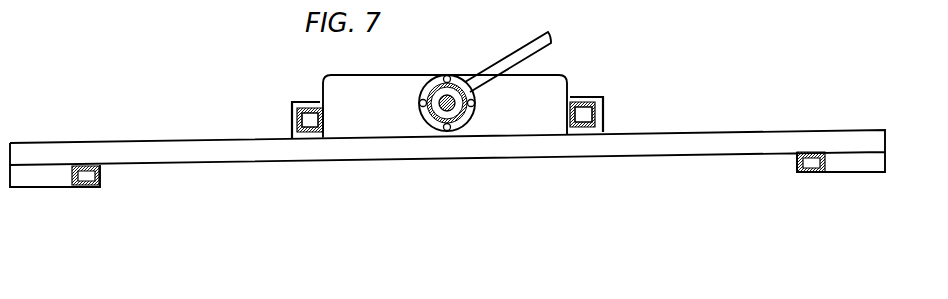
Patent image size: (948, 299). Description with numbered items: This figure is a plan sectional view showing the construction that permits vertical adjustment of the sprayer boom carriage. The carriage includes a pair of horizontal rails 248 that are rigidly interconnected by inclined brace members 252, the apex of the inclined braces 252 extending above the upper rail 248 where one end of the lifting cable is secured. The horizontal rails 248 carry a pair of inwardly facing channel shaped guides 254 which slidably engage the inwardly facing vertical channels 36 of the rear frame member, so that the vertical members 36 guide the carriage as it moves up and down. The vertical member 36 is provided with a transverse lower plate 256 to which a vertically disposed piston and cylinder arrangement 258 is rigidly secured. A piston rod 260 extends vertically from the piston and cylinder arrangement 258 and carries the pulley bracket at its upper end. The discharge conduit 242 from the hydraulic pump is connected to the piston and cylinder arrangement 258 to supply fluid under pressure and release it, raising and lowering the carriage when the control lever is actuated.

The vertical channels 36 is at (312, 102).
The discharge conduit 242 is at (537, 50).
The horizontal rails 248 is at (716, 132).
The inclined brace members 252 is at (100, 186).
The channel shaped guides 254 is at (292, 114).
The transverse lower plate 256 is at (561, 88).
The piston and cylinder arrangement 258 is at (458, 78).
The piston rod 260 is at (438, 103).